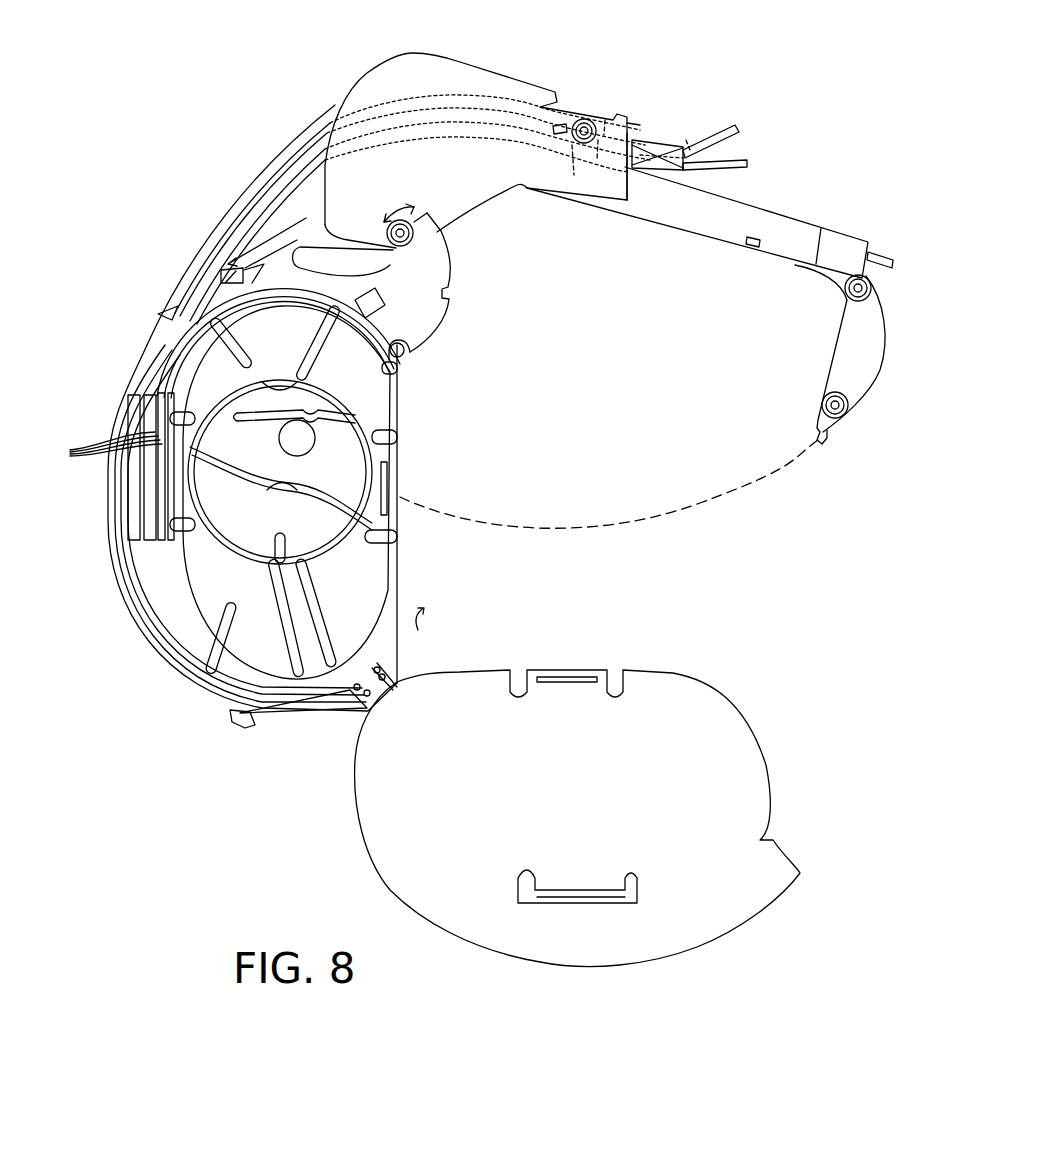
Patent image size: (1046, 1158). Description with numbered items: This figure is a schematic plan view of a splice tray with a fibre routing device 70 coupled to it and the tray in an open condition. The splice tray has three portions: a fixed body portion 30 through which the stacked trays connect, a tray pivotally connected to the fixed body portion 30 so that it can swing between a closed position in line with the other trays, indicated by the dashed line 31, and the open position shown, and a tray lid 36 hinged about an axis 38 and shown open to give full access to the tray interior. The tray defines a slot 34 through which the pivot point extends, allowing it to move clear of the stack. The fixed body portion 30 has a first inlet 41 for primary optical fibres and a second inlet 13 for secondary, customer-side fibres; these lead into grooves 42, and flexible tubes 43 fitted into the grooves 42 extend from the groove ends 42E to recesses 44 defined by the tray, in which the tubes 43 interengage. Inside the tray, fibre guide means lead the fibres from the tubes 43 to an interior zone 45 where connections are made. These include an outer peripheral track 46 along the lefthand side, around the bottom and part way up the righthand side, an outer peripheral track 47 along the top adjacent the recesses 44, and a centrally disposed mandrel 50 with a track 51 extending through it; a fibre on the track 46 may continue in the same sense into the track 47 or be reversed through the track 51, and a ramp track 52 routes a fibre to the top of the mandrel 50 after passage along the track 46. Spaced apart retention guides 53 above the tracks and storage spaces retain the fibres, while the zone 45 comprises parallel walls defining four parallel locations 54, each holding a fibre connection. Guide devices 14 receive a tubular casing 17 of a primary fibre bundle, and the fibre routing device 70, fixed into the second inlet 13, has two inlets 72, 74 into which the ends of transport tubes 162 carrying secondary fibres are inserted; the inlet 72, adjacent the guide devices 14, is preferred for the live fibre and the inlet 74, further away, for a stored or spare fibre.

The second inlet 13 is at (635, 140).
The guide device 14 is at (820, 233).
The tubular casing 17 is at (882, 252).
The fixed body portion 30 is at (510, 86).
The dashed line 31 is at (703, 505).
The slot 34 is at (385, 260).
The tray lid 36 is at (353, 827).
The axis 38 is at (340, 718).
The first inlet 41 is at (573, 170).
The grooves 42 is at (408, 120).
The ends of the grooves 42E is at (608, 125).
The flexible tubes 43 is at (300, 168).
The recesses 44 is at (168, 310).
The zone 45 is at (135, 522).
The outer peripheral track 46 is at (128, 365).
The outer peripheral track 47 is at (395, 343).
The mandrel 50 is at (238, 348).
The track 51 is at (330, 492).
The ramp track 52 is at (352, 415).
The retention guides 53 is at (388, 383).
The parallel locations 54 is at (103, 446).
The fibre routing device 70 is at (657, 150).
The inlet 72 is at (682, 177).
The inlet 74 is at (688, 150).
The transport tube 162 is at (740, 130).